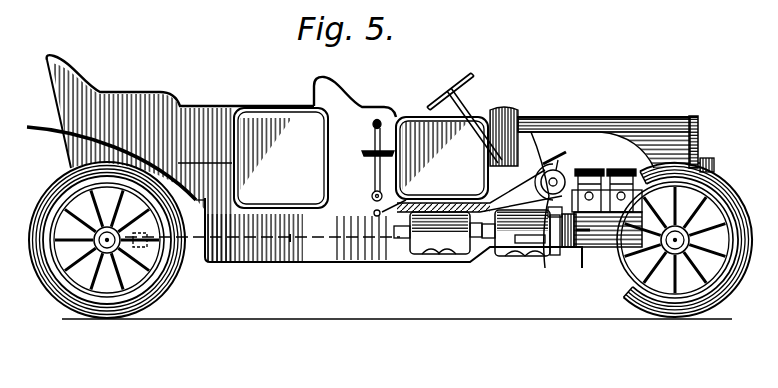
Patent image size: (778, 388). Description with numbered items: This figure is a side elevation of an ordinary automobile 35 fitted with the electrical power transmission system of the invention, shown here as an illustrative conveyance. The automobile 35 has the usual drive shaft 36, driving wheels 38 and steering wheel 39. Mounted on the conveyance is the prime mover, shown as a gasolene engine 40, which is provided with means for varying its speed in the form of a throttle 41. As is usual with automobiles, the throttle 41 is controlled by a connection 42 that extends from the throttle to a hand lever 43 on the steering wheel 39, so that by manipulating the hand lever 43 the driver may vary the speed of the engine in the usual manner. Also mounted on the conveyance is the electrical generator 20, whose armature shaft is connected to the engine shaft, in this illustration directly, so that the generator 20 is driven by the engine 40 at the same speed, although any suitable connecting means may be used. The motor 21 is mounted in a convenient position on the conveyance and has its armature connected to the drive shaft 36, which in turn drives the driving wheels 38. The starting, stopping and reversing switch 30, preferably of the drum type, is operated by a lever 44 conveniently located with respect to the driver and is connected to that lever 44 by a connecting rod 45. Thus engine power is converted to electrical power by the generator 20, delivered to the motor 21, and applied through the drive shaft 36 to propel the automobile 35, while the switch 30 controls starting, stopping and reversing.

The electrical generator 20 is at (553, 256).
The motor 21 is at (418, 252).
The starting, stopping and reversing switch 30 is at (563, 174).
The automobile 35 is at (290, 112).
The drive shaft 36 is at (293, 242).
The driving wheels 38 is at (144, 305).
The steering wheel 39 is at (475, 76).
The gasolene engine 40 is at (622, 172).
The throttle 41 is at (578, 248).
The connection 42 is at (533, 160).
The hand lever 43 is at (438, 100).
The lever 44 is at (372, 124).
The connecting rod 45 is at (410, 200).